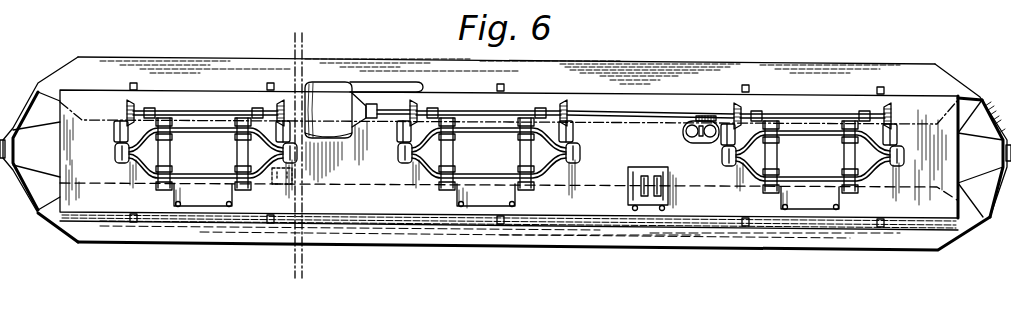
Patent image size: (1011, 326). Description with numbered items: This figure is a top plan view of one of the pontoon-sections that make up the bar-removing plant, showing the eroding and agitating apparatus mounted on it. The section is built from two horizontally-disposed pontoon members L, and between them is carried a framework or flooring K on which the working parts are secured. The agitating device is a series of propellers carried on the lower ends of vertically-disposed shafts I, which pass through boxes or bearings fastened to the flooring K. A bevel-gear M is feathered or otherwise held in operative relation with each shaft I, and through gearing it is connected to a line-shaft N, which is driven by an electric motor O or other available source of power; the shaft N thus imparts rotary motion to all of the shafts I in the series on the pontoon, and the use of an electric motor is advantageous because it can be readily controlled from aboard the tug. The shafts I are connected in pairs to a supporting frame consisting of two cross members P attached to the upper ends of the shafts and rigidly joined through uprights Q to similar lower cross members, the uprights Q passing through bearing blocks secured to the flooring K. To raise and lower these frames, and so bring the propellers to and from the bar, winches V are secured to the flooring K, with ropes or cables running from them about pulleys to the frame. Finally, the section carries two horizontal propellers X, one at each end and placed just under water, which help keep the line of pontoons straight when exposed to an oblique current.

The framework or flooring K is at (509, 156).
The pontoon members L is at (105, 233).
The bevel-gear M is at (126, 157).
The line-shaft N is at (632, 111).
The electric motor O is at (364, 110).
The cross members P is at (507, 164).
The uprights Q is at (509, 154).
The vertically-disposed shafts I is at (113, 151).
The winches V is at (647, 170).
The horizontal propellers X is at (697, 144).